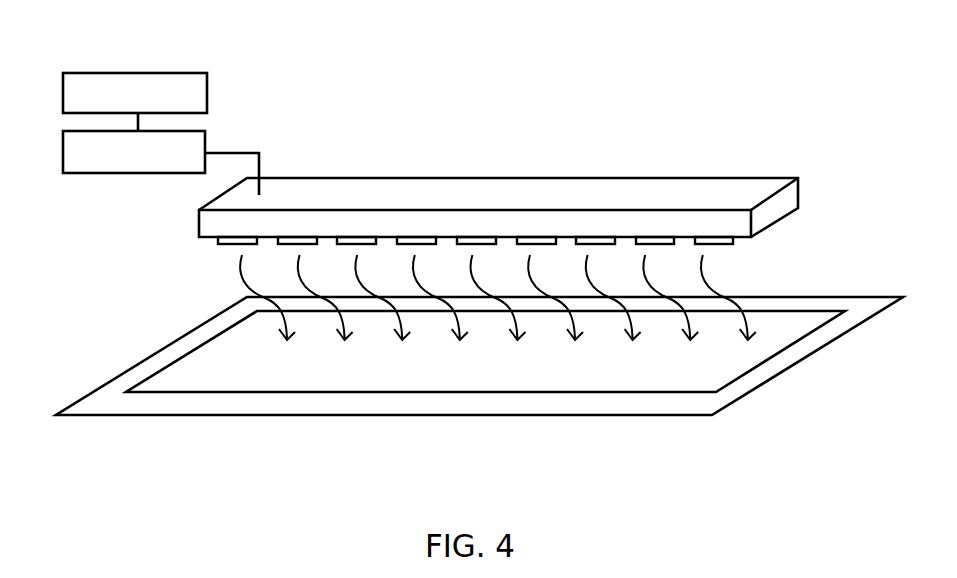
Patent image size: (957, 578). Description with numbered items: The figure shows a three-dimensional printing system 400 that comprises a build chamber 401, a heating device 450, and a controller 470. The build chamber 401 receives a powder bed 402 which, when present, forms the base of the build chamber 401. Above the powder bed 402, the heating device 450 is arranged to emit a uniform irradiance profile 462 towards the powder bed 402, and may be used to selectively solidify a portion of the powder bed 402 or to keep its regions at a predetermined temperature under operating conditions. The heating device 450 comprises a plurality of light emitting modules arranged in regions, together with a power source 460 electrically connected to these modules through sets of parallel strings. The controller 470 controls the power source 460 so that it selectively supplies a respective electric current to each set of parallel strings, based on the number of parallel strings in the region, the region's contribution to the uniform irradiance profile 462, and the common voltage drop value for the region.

The three-dimensional printing system 400 is at (453, 133).
The build chamber 401 is at (115, 397).
The powder bed 402 is at (207, 365).
The heating device 450 is at (554, 173).
The power source 460 is at (92, 160).
The uniform irradiance profile 462 is at (749, 284).
The controller 470 is at (177, 100).